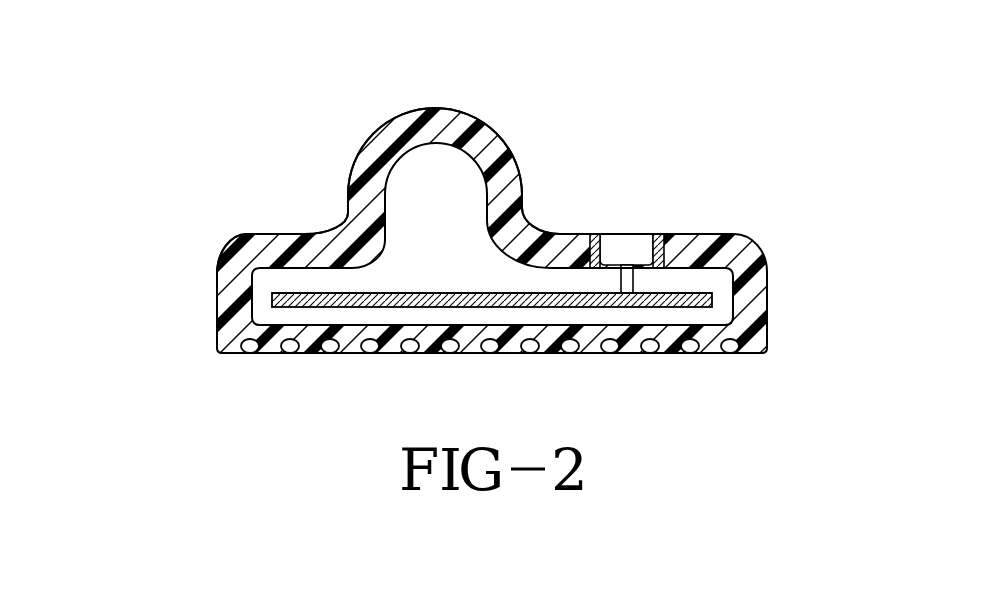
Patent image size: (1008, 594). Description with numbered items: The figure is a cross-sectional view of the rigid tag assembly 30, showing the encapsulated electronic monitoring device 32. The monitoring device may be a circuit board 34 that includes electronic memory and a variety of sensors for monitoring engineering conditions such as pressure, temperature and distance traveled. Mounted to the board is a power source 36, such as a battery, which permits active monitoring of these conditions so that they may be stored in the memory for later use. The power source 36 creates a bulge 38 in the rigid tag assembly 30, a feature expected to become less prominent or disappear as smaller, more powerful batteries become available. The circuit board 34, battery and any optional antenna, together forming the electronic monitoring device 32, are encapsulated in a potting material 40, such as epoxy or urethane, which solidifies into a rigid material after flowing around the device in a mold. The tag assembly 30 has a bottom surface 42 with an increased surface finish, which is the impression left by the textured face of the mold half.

The rigid tag assembly 30 is at (190, 282).
The electronic monitoring device 32 is at (310, 300).
The circuit board 34 is at (693, 300).
The power source 36 is at (461, 173).
The bulge 38 is at (473, 118).
The potting material 40 is at (283, 243).
The bottom surface 42 is at (629, 350).